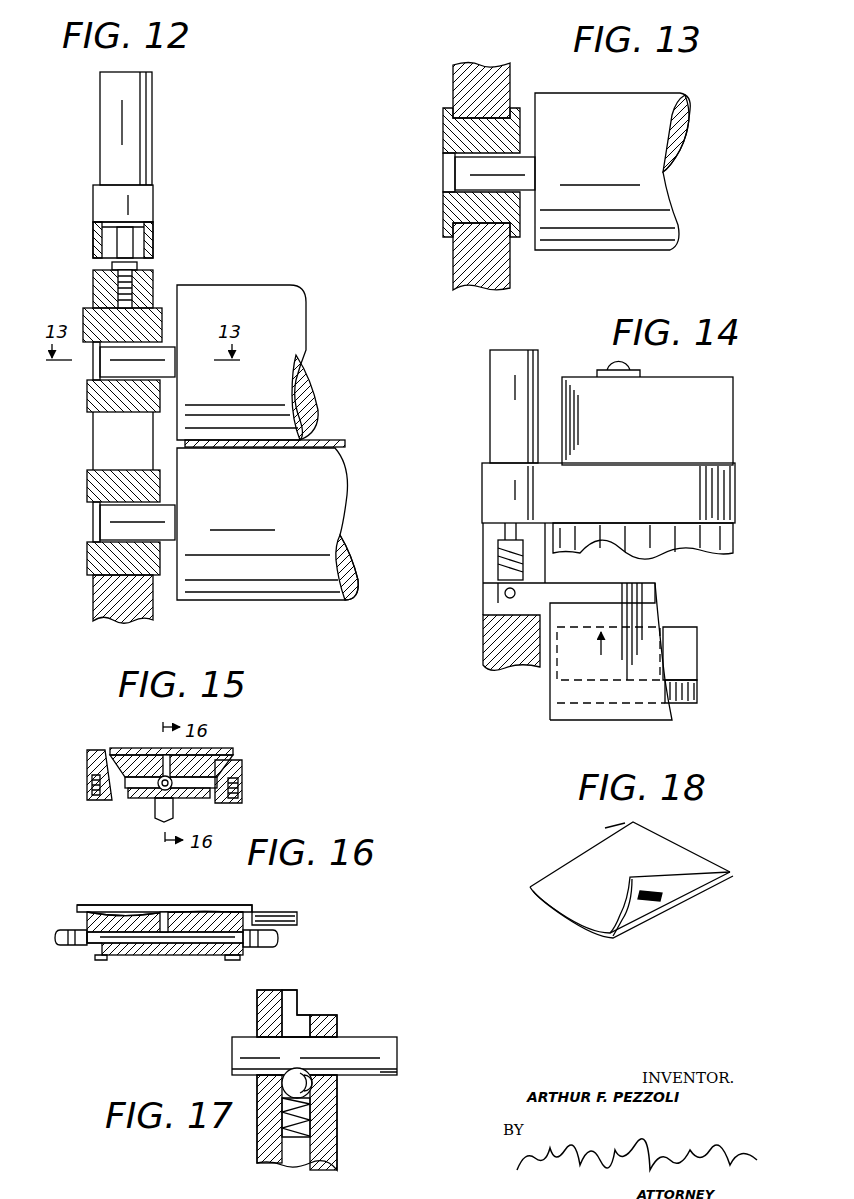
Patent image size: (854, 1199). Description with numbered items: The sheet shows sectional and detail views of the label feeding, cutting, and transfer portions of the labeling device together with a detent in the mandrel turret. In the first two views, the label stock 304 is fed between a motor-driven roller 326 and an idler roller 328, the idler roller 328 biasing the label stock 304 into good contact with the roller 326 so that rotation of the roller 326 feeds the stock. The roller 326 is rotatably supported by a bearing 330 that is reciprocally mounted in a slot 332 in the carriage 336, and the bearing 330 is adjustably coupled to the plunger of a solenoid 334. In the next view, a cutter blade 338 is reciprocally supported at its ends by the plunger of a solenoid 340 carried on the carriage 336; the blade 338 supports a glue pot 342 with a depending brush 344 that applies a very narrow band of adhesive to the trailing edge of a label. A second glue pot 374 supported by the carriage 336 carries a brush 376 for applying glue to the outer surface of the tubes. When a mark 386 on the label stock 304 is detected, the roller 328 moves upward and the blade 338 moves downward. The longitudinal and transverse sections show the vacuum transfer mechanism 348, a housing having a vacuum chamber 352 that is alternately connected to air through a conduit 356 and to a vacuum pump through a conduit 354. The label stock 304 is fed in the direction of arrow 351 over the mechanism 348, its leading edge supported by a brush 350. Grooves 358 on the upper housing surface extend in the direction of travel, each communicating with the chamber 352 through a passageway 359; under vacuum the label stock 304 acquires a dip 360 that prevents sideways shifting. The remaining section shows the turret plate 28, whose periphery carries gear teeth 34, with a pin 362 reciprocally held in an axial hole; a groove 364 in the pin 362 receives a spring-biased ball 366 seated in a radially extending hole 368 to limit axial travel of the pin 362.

In FIG. 12, the solenoid 334 is at (108, 141).
In FIG. 12, the bearing 330 is at (87, 397).
In FIG. 13, the bearing 330 is at (446, 208).
In FIG. 12, the slot 332 is at (93, 432).
In FIG. 13, the slot 332 is at (505, 236).
In FIG. 12, the carriage 336 is at (95, 587).
In FIG. 13, the carriage 336 is at (455, 73).
In FIG. 14, the carriage 336 is at (485, 636).
In FIG. 12, the roller 326 is at (256, 286).
In FIG. 13, the roller 326 is at (650, 165).
In FIG. 12, the idler roller 328 is at (330, 494).
In FIG. 12, the label stock 304 is at (337, 441).
In FIG. 15, the label stock 304 is at (213, 750).
In FIG. 16, the label stock 304 is at (233, 905).
In FIG. 18, the label stock 304 is at (571, 863).
In FIG. 14, the solenoid 340 is at (500, 381).
In FIG. 14, the glue pot 374 is at (688, 429).
In FIG. 14, the brush 376 is at (715, 555).
In FIG. 14, the cutter blade 338 is at (655, 595).
In FIG. 14, the glue pot 342 is at (697, 644).
In FIG. 14, the brush 344 is at (697, 691).
In FIG. 15, the vacuum transfer mechanism 348 is at (250, 778).
In FIG. 16, the vacuum transfer mechanism 348 is at (150, 967).
In FIG. 15, the vacuum chamber 352 is at (135, 788).
In FIG. 16, the vacuum chamber 352 is at (196, 945).
In FIG. 15, the dip 360 is at (167, 755).
In FIG. 15, the passageway 359 is at (160, 780).
In FIG. 16, the passageway 359 is at (168, 912).
In FIG. 16, the arrow 351 is at (100, 889).
In FIG. 16, the groove 358 is at (143, 909).
In FIG. 16, the conduit 356 is at (68, 946).
In FIG. 16, the conduit 354 is at (263, 948).
In FIG. 16, the brush 350 is at (290, 920).
In FIG. 17, the gear teeth 34 is at (258, 990).
In FIG. 17, the hole 368 is at (301, 1015).
In FIG. 17, the pin 362 is at (375, 1046).
In FIG. 17, the groove 364 is at (355, 1075).
In FIG. 17, the circular plate 28 is at (333, 1137).
In FIG. 17, the ball 366 is at (292, 1069).
In FIG. 18, the mark 386 is at (655, 903).